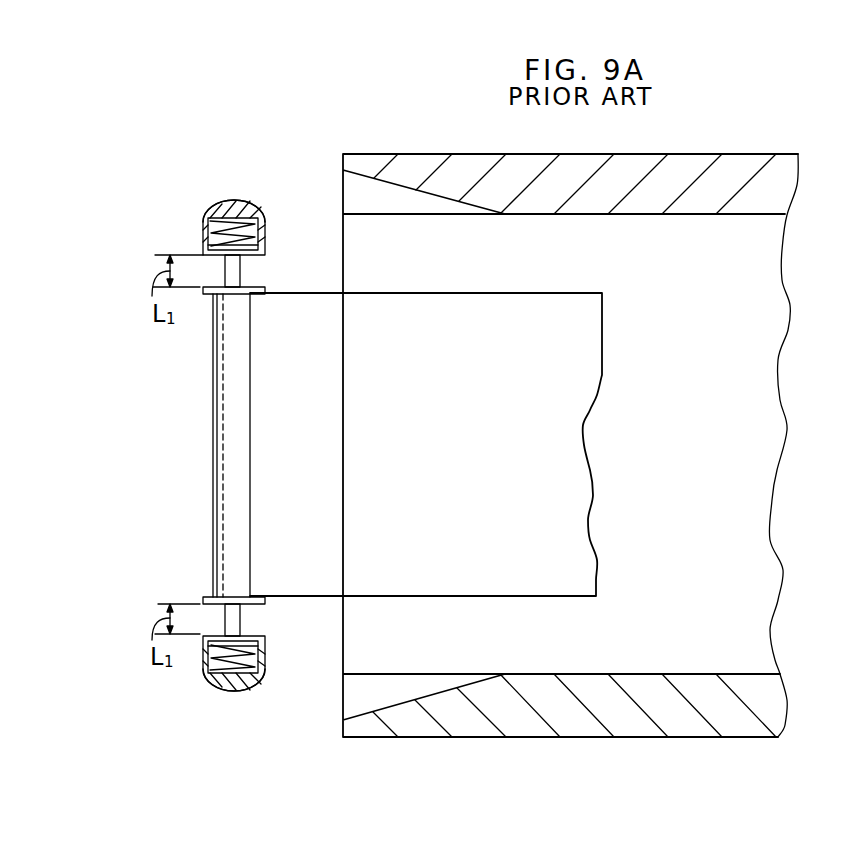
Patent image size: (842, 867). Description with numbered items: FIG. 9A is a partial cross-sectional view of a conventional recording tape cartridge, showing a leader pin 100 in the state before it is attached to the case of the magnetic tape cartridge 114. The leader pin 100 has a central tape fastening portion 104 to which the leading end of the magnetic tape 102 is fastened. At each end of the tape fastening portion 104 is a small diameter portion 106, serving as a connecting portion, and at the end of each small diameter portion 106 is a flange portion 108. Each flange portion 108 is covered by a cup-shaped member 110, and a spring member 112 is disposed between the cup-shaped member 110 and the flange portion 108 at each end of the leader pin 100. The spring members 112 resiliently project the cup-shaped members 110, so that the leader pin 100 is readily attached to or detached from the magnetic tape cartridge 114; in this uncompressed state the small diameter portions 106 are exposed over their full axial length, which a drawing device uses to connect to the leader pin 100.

The leader pin 100 is at (263, 171).
The magnetic tape 102 is at (596, 376).
The tape fastening portion 104 is at (226, 433).
The small diameter portion 106 is at (240, 270).
The flange portion 108 is at (203, 234).
The cup-shaped member 110 is at (252, 206).
The spring member 112 is at (255, 230).
The magnetic tape cartridge 114 is at (722, 135).